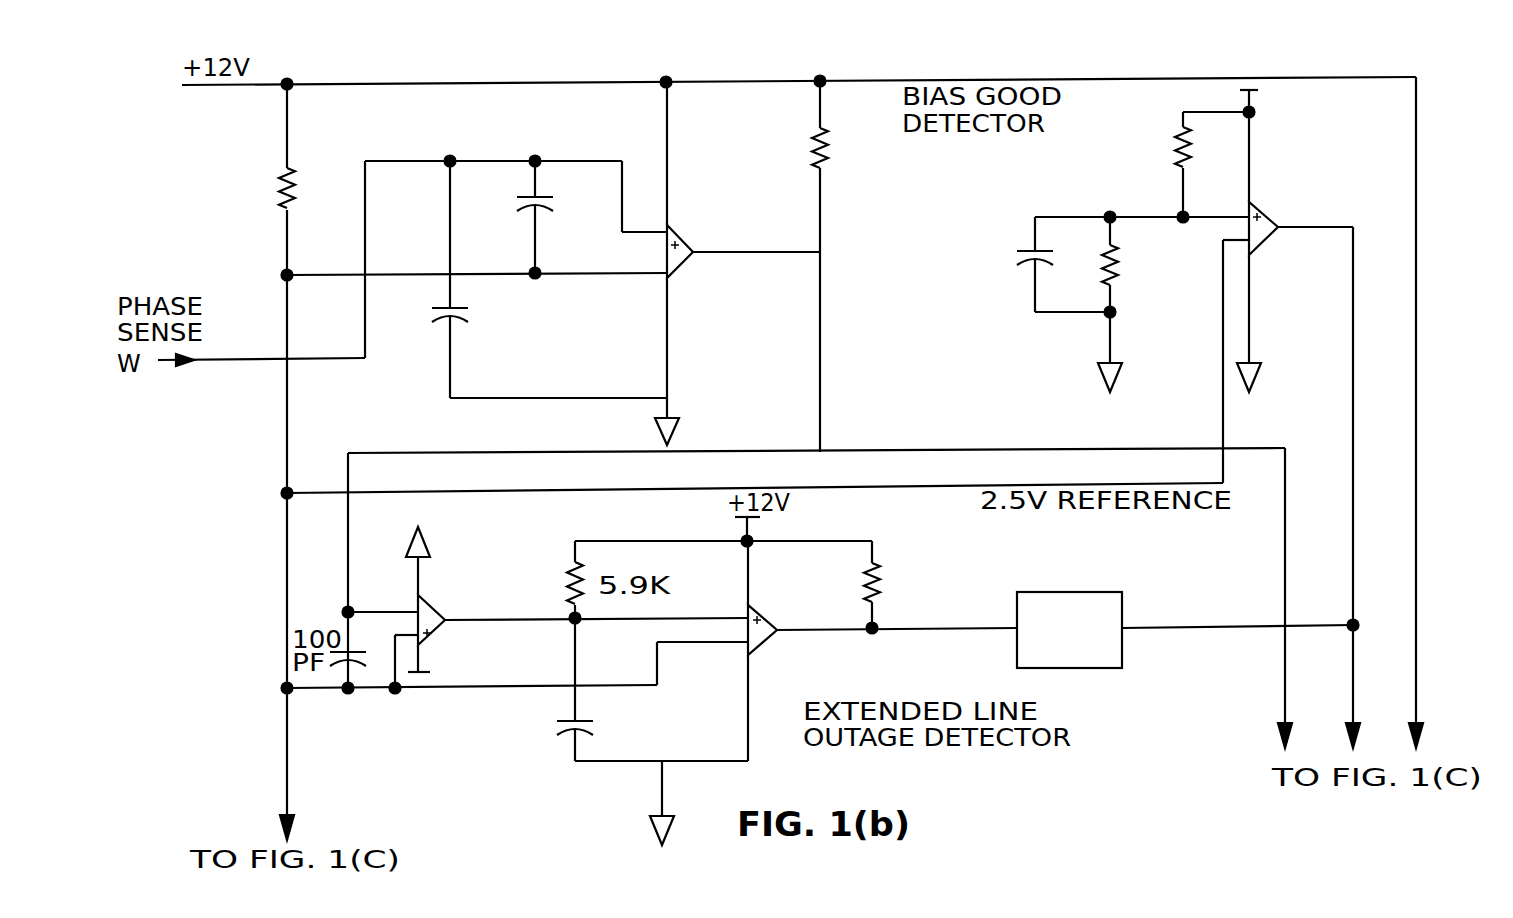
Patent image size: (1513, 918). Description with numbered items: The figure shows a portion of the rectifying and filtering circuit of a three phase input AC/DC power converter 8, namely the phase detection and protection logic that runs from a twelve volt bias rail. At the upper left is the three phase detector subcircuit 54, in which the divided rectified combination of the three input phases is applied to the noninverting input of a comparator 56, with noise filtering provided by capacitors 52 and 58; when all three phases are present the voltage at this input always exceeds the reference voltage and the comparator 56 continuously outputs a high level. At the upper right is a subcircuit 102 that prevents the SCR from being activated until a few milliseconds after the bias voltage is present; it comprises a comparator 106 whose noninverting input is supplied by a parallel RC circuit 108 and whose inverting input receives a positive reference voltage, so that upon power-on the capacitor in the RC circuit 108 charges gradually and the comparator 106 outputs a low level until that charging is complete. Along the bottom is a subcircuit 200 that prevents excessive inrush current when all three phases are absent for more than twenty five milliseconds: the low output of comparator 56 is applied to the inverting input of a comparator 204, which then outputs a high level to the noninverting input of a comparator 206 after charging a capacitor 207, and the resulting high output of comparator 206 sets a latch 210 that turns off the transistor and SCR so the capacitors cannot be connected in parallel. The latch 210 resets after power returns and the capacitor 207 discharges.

The AC/DC power converter 8 is at (1237, 52).
The capacitor 52 is at (455, 312).
The three phase detector subcircuit 54 is at (708, 182).
The comparator 56 is at (684, 262).
The capacitor 58 is at (544, 192).
The subcircuit 102 is at (1286, 172).
The comparator 106 is at (1263, 243).
The parallel RC circuit 108 is at (1052, 343).
The subcircuit 200 is at (970, 553).
The comparator 204 is at (432, 603).
The comparator 206 is at (765, 645).
The capacitor 207 is at (585, 722).
The latch 210 is at (1088, 658).